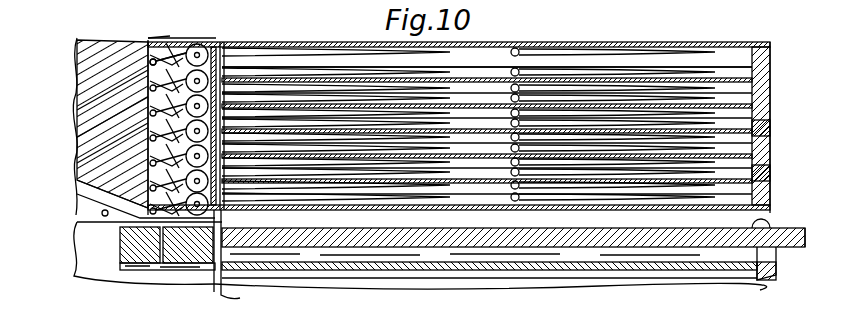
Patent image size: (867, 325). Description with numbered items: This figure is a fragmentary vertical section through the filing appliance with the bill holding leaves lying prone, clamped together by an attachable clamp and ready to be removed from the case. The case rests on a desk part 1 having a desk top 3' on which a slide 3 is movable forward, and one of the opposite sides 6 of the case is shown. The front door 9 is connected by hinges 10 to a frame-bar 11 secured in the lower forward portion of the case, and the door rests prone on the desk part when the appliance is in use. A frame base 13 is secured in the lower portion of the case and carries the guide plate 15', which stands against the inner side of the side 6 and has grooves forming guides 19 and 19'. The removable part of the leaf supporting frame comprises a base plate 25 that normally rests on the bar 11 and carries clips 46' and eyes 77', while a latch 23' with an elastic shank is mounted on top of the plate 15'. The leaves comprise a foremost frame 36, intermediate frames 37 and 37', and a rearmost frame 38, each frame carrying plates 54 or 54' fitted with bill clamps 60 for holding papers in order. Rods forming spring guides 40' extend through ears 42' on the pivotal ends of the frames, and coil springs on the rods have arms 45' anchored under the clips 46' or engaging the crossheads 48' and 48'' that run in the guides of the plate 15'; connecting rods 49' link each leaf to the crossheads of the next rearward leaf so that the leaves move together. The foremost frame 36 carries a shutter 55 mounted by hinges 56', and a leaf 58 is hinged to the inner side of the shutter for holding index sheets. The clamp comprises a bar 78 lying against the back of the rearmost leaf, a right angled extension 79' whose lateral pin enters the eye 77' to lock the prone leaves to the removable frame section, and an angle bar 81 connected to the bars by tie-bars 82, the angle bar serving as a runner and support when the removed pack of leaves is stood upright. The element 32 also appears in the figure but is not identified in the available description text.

The side 6 is at (118, 40).
The crosshead 48'' is at (134, 36).
The angle bar 81 is at (151, 58).
The tie-bar 82 is at (164, 42).
The latch 23' is at (179, 38).
The spring arm 45' is at (207, 159).
The spring guide rod 40' is at (239, 113).
The right angled extension 79' is at (487, 44).
The clamp bar 78 is at (291, 46).
The plate 54 is at (359, 52).
The plate 54' is at (613, 38).
The bill clamp 60 is at (586, 52).
The rearmost frame 38 is at (772, 52).
The intermediate frame 37' is at (783, 128).
The intermediate frame 37 is at (781, 173).
The foremost frame 36 is at (772, 206).
The guide plate 15' is at (97, 124).
The connecting rod 49' is at (97, 93).
The crosshead 48' is at (97, 119).
The guide 19' is at (97, 145).
The bar 32 is at (80, 180).
The frame base 13 is at (80, 198).
The guide 19 is at (134, 253).
The frame-bar 11 is at (136, 262).
The base plate 25 is at (178, 230).
The clip 46' is at (167, 292).
The ear 42' is at (227, 262).
The hinge 10 is at (224, 262).
The hinge 56' is at (459, 257).
The eye 77' is at (465, 289).
The leaf 58 is at (331, 212).
The shutter 55 is at (371, 212).
The front door 9 is at (412, 247).
The desk part 1 is at (462, 264).
The slide 3 is at (708, 278).
The desk top 3' is at (824, 270).